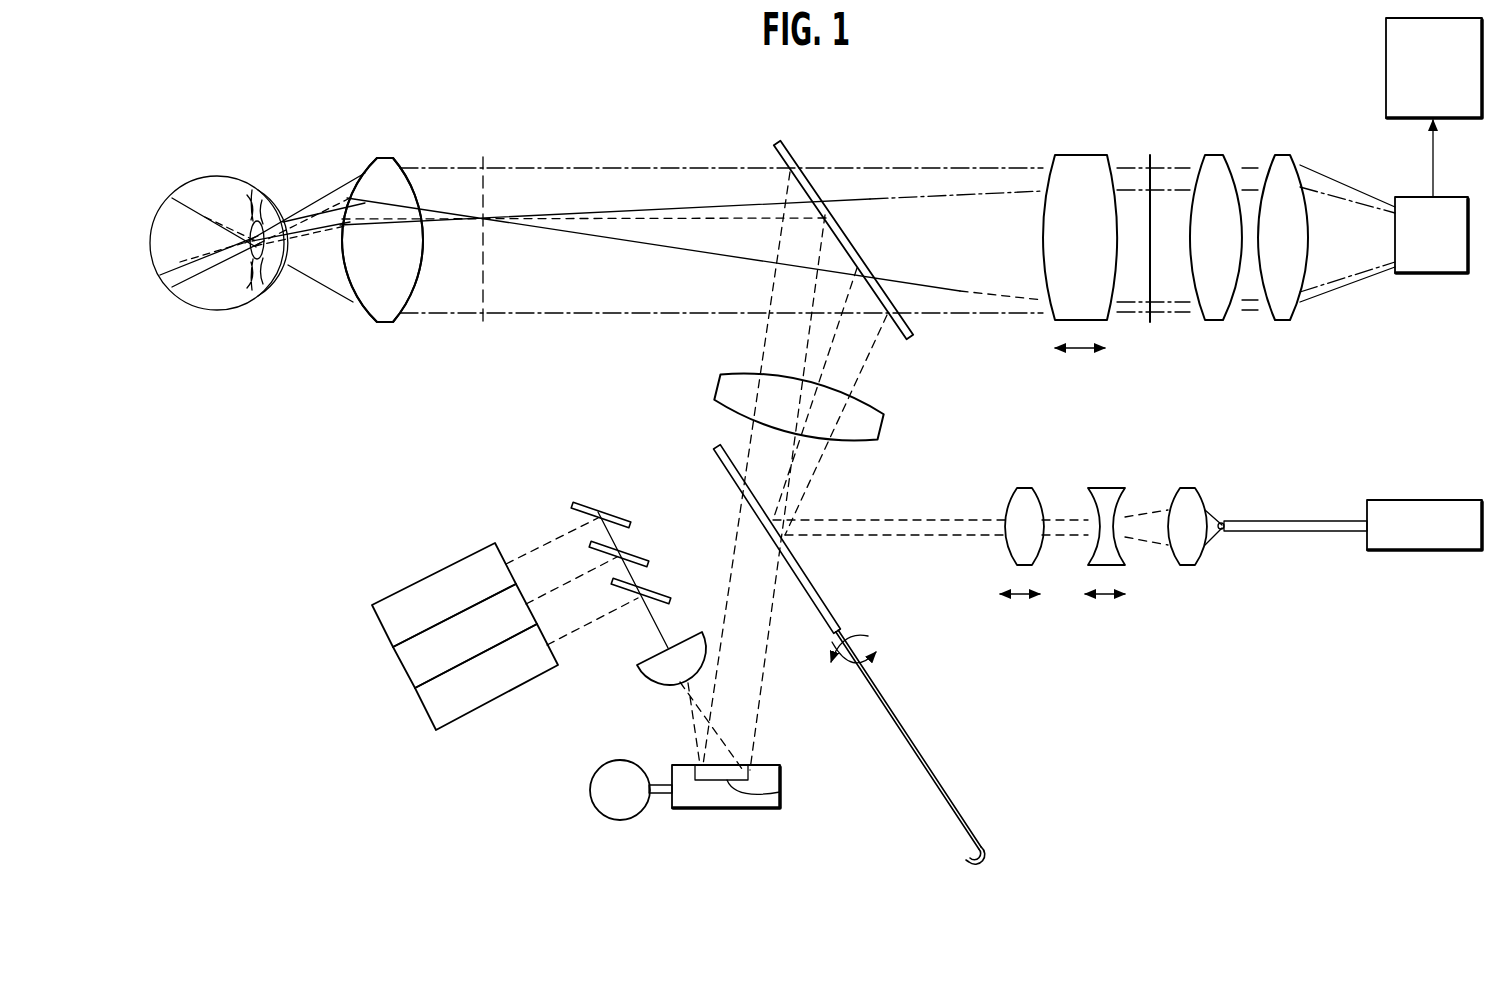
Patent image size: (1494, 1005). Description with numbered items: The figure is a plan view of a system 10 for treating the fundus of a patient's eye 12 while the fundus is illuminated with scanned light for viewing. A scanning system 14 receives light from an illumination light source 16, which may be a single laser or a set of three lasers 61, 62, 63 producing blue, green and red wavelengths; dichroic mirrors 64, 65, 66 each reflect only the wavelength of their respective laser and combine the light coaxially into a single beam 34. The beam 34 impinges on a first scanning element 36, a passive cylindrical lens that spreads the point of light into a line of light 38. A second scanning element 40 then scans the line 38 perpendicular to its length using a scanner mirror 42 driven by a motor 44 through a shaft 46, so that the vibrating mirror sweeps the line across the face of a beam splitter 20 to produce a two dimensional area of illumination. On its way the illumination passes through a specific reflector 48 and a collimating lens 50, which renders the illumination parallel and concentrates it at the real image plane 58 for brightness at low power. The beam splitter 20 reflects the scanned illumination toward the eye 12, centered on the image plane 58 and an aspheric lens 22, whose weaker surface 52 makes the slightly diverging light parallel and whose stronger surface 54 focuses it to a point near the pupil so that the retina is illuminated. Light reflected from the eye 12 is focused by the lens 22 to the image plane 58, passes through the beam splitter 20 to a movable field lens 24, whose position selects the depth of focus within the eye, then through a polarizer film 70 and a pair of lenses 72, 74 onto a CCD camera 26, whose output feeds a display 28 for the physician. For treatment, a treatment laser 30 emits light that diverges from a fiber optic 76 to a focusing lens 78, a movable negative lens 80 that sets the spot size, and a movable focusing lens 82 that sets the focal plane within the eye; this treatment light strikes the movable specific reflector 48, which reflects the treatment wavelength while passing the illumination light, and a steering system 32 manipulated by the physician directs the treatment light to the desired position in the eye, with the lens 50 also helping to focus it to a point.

The system 10 is at (370, 120).
The eye 12 is at (220, 178).
The scanning system 14 is at (613, 733).
The illumination light source 16 is at (553, 487).
The beam splitter 20 is at (793, 153).
The aspheric lens 22 is at (396, 166).
The movable field lens 24 is at (1078, 160).
The CCD camera 26 is at (1433, 274).
The display 28 is at (1386, 78).
The treatment laser 30 is at (1415, 500).
The steering system 32 is at (962, 678).
The beam of light 34 is at (650, 628).
The first scanning element 36 is at (650, 683).
The line of light 38 is at (782, 790).
The second scanning element 40 is at (687, 820).
The scanner mirror 42 is at (775, 778).
The motor 44 is at (607, 815).
The shaft 46 is at (659, 782).
The specific reflector 48 is at (832, 608).
The collimating lens 50 is at (873, 430).
The weaker surface 52 is at (410, 292).
The stronger surface 54 is at (362, 282).
The real image plane 58 is at (487, 160).
The laser 61 is at (397, 630).
The laser 62 is at (413, 673).
The laser 63 is at (438, 710).
The dichroic mirror 64 is at (623, 512).
The dichroic mirror 65 is at (645, 553).
The dichroic mirror 66 is at (663, 595).
The polarizer film 70 is at (1152, 156).
The lens 72 is at (1215, 160).
The lens 74 is at (1285, 158).
The fiber optic 76 is at (1280, 518).
The focusing lens 78 is at (1190, 497).
The negative lens 80 is at (1115, 490).
The focusing lens 82 is at (1025, 497).